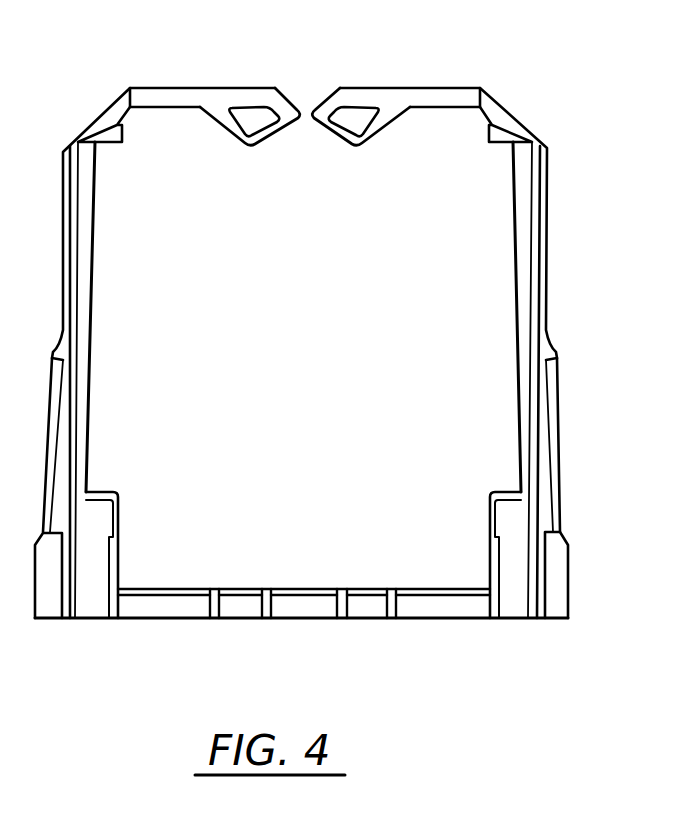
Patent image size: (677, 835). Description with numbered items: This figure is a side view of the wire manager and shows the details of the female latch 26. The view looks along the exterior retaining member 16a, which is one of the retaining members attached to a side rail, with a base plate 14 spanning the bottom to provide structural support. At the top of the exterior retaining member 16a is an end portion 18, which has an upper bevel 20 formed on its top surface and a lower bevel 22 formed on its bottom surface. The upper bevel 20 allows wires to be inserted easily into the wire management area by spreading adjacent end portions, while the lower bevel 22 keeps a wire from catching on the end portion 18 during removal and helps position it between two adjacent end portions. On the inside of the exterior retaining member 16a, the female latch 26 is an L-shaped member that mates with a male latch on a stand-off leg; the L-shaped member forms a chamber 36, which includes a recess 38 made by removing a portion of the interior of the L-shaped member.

The base plate 14 is at (157, 588).
The exterior retaining member 16a is at (546, 256).
The end portion 18 is at (488, 80).
The upper bevel 20 is at (315, 110).
The lower bevel 22 is at (337, 138).
The female latch 26 is at (486, 563).
The chamber 36 is at (511, 619).
The recess 38 is at (518, 491).